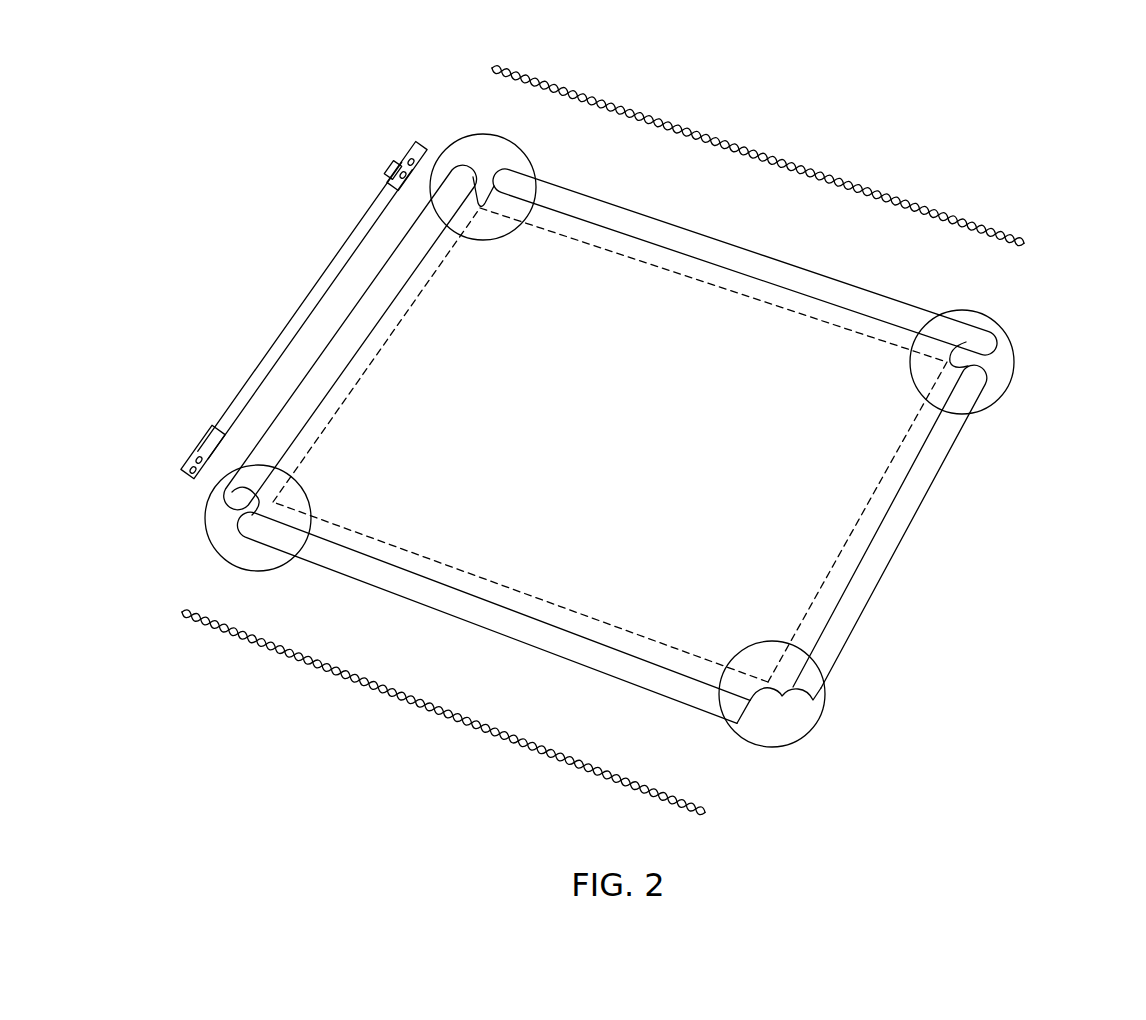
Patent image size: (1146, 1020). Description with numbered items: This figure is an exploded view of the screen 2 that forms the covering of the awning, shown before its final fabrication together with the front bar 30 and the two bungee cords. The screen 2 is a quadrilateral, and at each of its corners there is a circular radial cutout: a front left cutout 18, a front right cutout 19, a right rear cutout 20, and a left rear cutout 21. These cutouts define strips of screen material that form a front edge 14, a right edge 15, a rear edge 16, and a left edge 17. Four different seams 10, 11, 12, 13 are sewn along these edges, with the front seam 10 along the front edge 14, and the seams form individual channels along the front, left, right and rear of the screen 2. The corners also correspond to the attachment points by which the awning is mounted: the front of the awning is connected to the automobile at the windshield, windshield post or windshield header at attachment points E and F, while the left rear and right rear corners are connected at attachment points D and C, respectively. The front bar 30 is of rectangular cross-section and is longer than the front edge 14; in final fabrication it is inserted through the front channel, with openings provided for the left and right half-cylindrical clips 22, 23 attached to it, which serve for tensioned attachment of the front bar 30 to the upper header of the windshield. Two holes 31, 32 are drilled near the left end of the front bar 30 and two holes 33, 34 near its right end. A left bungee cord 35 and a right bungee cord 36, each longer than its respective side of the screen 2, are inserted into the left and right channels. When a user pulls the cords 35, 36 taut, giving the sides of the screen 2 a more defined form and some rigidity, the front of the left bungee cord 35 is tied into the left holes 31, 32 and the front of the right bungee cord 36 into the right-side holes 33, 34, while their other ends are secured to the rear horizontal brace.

The screen 2 is at (657, 588).
The front seam 10 is at (418, 300).
The seam 11 is at (373, 540).
The seam 12 is at (743, 297).
The seam 13 is at (888, 470).
The front edge 14 is at (290, 395).
The right edge 15 is at (633, 207).
The rear edge 16 is at (882, 583).
The left edge 17 is at (533, 645).
The front left circular radial cutout 18 is at (257, 508).
The front right circular radial cutout 19 is at (481, 205).
The right rear circular radial cutout 20 is at (997, 348).
The left rear circular radial cutout 21 is at (773, 688).
The left half-cylindrical clip 22 is at (206, 436).
The right half-cylindrical clip 23 is at (383, 170).
The front bar 30 is at (308, 310).
The left hole 31 is at (199, 466).
The left hole 32 is at (191, 472).
The right-side hole 33 is at (426, 147).
The right-side hole 34 is at (410, 153).
The left bungee cord 35 is at (368, 698).
The right bungee cord 36 is at (830, 180).
The attachment point C is at (1002, 322).
The attachment point D is at (810, 733).
The attachment point E is at (215, 536).
The attachment point F is at (477, 135).